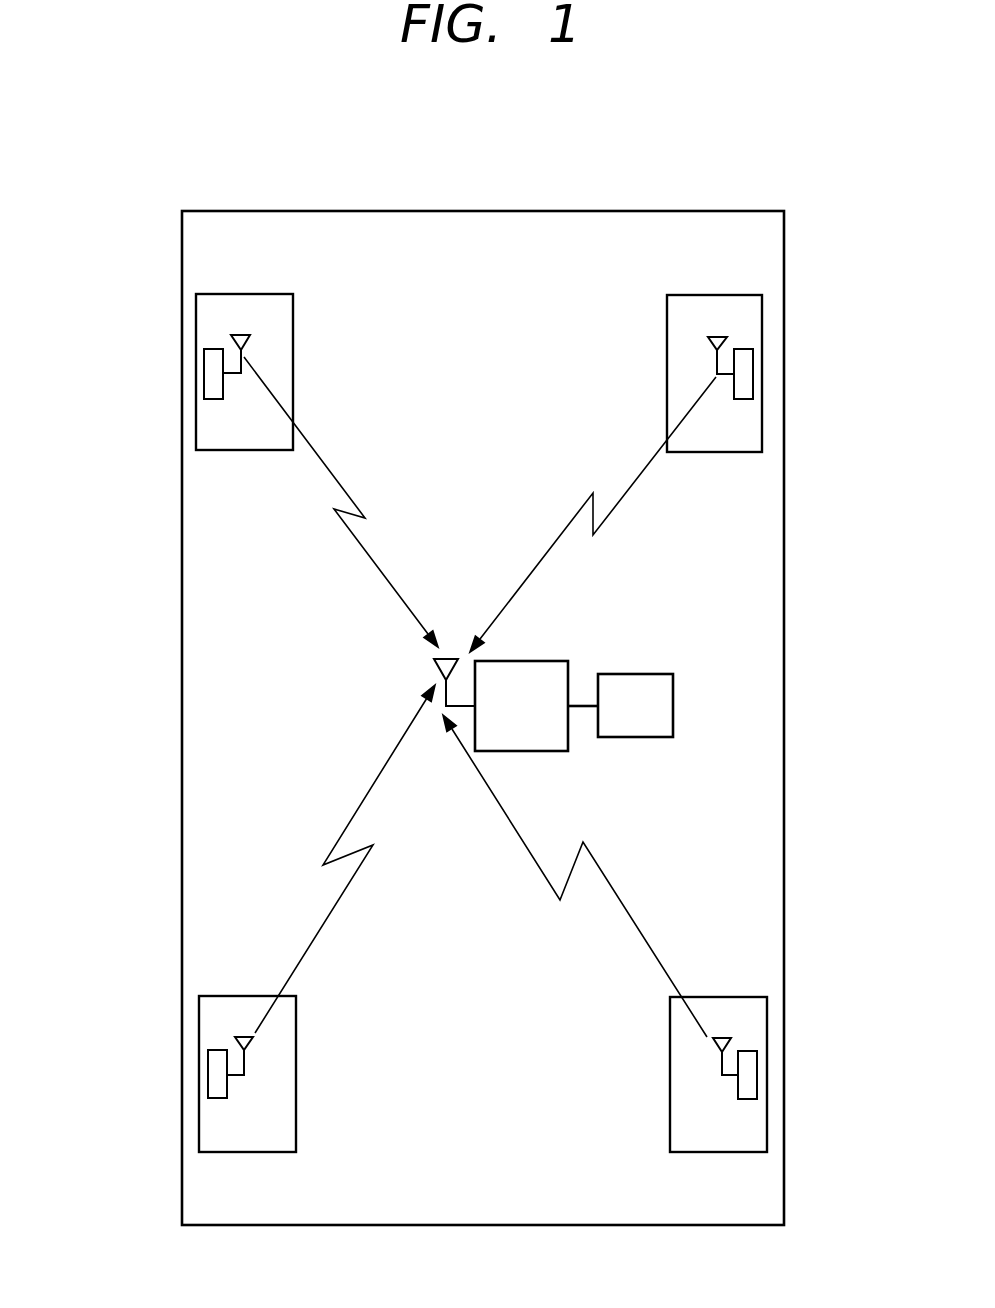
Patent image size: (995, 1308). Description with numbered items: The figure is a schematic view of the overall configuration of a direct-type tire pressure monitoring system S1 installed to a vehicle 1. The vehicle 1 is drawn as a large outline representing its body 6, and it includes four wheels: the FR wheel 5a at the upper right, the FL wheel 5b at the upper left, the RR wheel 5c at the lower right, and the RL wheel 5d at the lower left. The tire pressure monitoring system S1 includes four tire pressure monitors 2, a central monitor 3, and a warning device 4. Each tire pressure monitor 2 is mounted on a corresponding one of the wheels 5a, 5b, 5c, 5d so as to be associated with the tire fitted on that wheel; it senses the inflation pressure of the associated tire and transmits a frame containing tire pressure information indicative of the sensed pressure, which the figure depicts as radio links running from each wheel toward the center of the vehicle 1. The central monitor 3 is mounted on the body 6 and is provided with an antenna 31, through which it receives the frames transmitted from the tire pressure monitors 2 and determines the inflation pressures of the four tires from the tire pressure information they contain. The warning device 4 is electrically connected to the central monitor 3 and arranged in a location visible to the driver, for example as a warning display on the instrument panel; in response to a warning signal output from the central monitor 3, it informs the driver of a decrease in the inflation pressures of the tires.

The tire pressure monitoring system S1 is at (118, 200).
The vehicle 1 is at (670, 212).
The body 6 is at (784, 634).
The tire pressure monitor 2 is at (212, 349).
The FR wheel 5a is at (733, 295).
The FL wheel 5b is at (223, 294).
The RR wheel 5c is at (738, 1152).
The RL wheel 5d is at (228, 1152).
The antenna 31 is at (432, 665).
The central monitor 3 is at (540, 661).
The warning device 4 is at (652, 737).